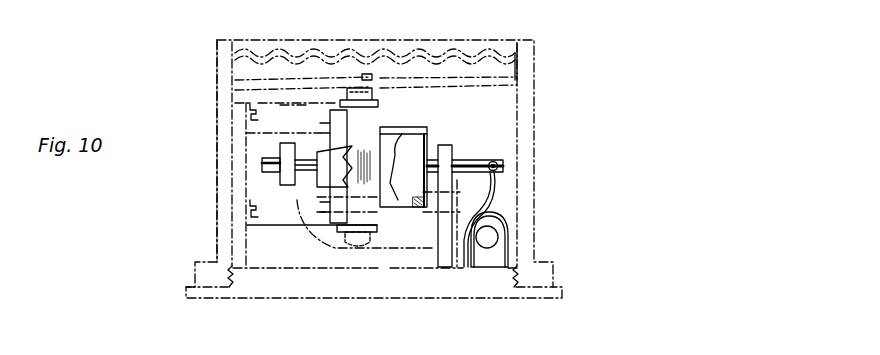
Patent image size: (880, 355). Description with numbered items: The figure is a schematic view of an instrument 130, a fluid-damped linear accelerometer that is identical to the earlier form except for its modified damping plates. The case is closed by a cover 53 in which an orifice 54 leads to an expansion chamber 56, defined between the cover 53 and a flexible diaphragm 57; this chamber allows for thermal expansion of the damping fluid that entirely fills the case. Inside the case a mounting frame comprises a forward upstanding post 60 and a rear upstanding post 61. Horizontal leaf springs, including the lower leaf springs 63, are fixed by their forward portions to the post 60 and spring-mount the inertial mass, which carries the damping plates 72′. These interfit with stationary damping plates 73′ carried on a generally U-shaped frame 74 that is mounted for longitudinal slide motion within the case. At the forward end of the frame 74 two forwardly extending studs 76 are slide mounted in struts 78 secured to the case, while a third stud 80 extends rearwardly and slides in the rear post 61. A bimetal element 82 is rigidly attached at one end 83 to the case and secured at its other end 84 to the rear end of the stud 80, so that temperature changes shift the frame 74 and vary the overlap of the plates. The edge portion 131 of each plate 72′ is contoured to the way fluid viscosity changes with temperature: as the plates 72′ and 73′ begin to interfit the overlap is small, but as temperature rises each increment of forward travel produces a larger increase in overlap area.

The instrument 130 is at (543, 93).
The flexible diaphragm 57 is at (317, 50).
The expansion chamber 56 is at (375, 72).
The orifice 54 is at (397, 53).
The cover 53 is at (460, 80).
The damping plate 72' is at (365, 138).
The edge portion 131 is at (368, 142).
The damping plate 73' is at (424, 157).
The U-shaped frame 74 is at (420, 180).
The strut 78 is at (287, 155).
The forward upstanding post 60 is at (238, 175).
The stud 76 is at (270, 173).
The third stud 80 is at (476, 160).
The attachment point 84 is at (497, 162).
The bimetal element 82 is at (490, 197).
The attachment point 83 is at (498, 237).
The rear upstanding post 61 is at (438, 223).
The lower leaf spring 63 is at (280, 228).